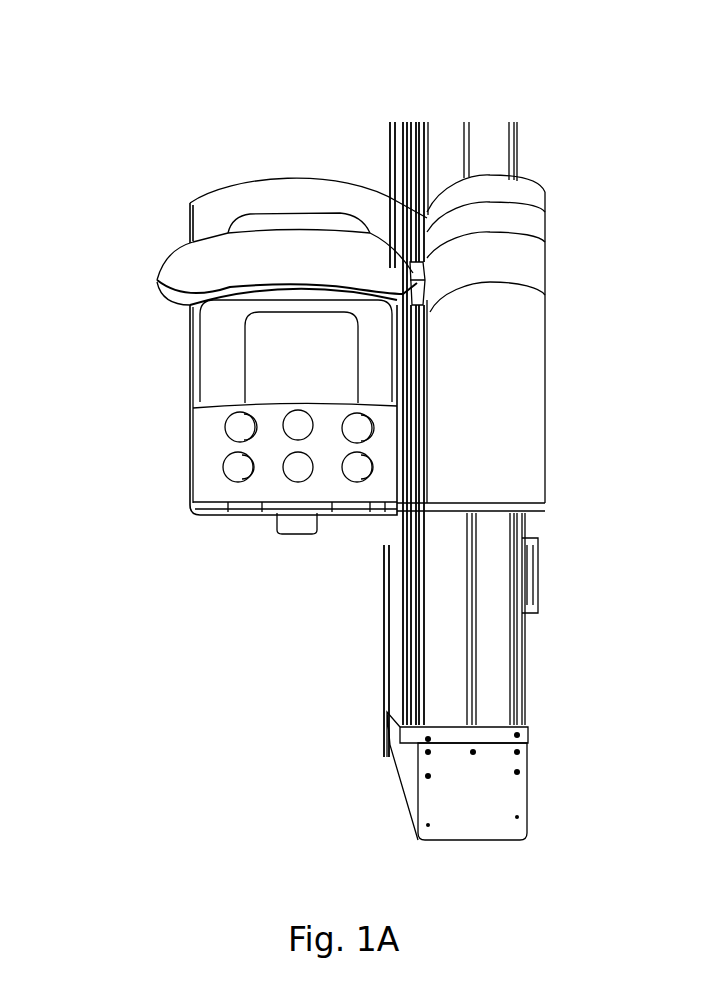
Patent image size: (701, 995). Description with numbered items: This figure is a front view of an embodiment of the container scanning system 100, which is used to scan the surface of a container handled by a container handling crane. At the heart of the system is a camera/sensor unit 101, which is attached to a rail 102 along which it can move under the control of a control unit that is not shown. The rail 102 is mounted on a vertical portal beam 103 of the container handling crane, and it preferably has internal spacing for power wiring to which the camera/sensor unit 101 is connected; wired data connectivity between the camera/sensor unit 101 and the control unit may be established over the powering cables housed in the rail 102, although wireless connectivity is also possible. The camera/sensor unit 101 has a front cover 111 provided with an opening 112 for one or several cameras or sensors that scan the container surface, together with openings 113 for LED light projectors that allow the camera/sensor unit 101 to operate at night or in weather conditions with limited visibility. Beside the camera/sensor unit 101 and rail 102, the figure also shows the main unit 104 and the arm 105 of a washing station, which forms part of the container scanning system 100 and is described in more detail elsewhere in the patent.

The container scanning system 100 is at (160, 144).
The camera/sensor unit 101 is at (252, 197).
The rail 102 is at (402, 125).
The vertical portal beam 103 is at (402, 771).
The main unit 104 is at (516, 344).
The arm 105 is at (180, 288).
The front cover 111 is at (207, 475).
The opening 112 is at (222, 355).
The openings 113 is at (240, 426).